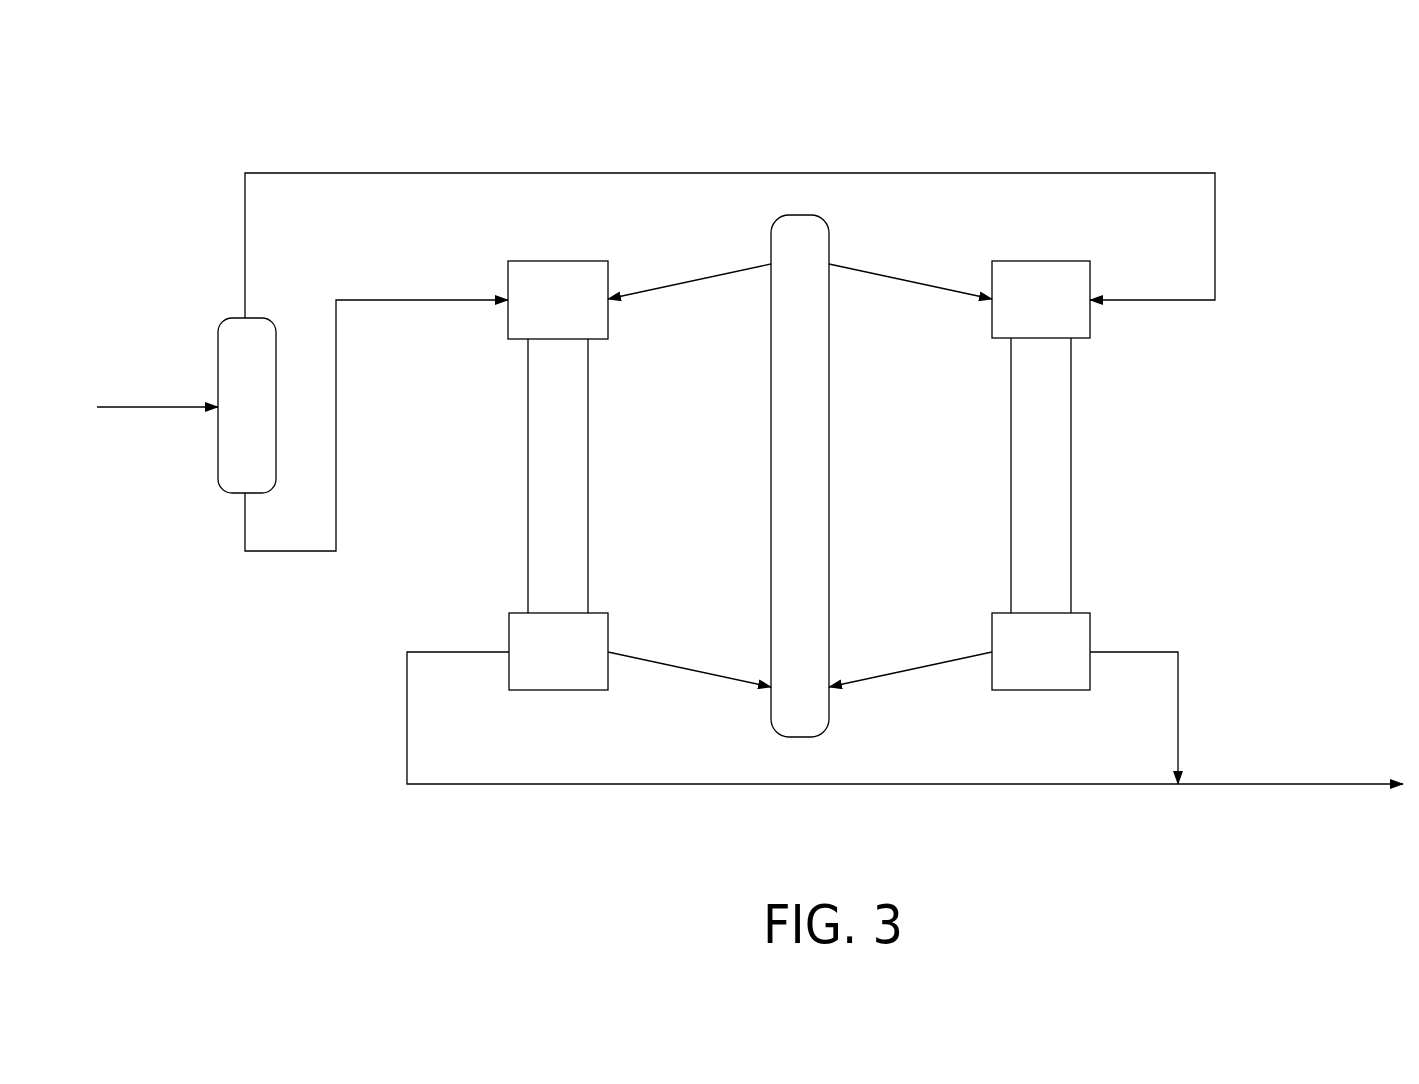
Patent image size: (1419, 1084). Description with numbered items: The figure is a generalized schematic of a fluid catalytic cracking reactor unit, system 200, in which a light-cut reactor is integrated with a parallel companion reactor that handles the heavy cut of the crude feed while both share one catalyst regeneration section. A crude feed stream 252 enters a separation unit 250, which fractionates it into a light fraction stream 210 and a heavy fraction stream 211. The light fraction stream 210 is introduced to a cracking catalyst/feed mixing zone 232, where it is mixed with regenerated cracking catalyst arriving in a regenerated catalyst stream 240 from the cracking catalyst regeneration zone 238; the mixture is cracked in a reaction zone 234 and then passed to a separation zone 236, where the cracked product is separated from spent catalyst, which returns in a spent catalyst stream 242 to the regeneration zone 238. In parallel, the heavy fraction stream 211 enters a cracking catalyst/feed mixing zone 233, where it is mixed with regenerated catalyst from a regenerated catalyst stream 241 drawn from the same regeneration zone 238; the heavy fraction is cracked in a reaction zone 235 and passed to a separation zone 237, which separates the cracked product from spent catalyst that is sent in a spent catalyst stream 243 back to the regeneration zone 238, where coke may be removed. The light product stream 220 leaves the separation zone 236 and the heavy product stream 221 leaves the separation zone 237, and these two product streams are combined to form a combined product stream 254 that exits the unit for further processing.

The system 200 is at (1266, 144).
The light fraction stream 210 is at (1215, 240).
The heavy fraction stream 211 is at (336, 415).
The light product stream 220 is at (1152, 652).
The heavy product stream 221 is at (428, 652).
The cracking catalyst/feed mixing zone 232 is at (1033, 261).
The cracking catalyst/feed mixing zone 233 is at (567, 261).
The reaction zone 234 is at (1071, 478).
The reaction zone 235 is at (528, 478).
The separation zone 236 is at (1033, 692).
The separation zone 237 is at (565, 692).
The cracking catalyst regeneration zone 238 is at (771, 478).
The regenerated catalyst stream 240 is at (918, 283).
The regenerated catalyst stream 241 is at (680, 283).
The spent catalyst stream 242 is at (920, 667).
The spent catalyst stream 243 is at (680, 667).
The separation unit 250 is at (218, 455).
The crude feed stream 252 is at (133, 406).
The combined product stream 254 is at (1293, 784).